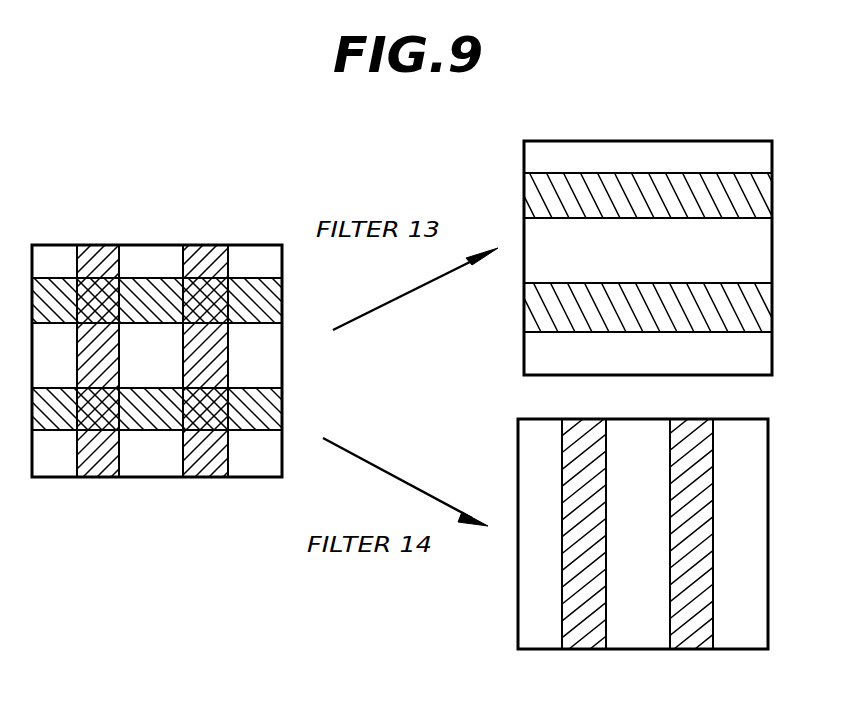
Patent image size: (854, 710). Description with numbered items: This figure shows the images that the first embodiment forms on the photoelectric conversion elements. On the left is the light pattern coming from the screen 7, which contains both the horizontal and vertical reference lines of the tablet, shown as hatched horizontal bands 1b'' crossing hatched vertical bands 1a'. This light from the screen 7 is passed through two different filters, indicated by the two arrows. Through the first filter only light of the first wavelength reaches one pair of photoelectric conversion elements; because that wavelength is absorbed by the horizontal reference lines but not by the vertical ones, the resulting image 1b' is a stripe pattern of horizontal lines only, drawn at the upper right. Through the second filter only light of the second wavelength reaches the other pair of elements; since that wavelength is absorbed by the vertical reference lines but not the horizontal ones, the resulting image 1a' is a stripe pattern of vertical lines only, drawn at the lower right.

The screen 7 is at (150, 245).
The image 1a' is at (427, 477).
The second color filter stripes (horizontal) in combined array 1b'' is at (212, 354).
The image 1b' is at (646, 258).